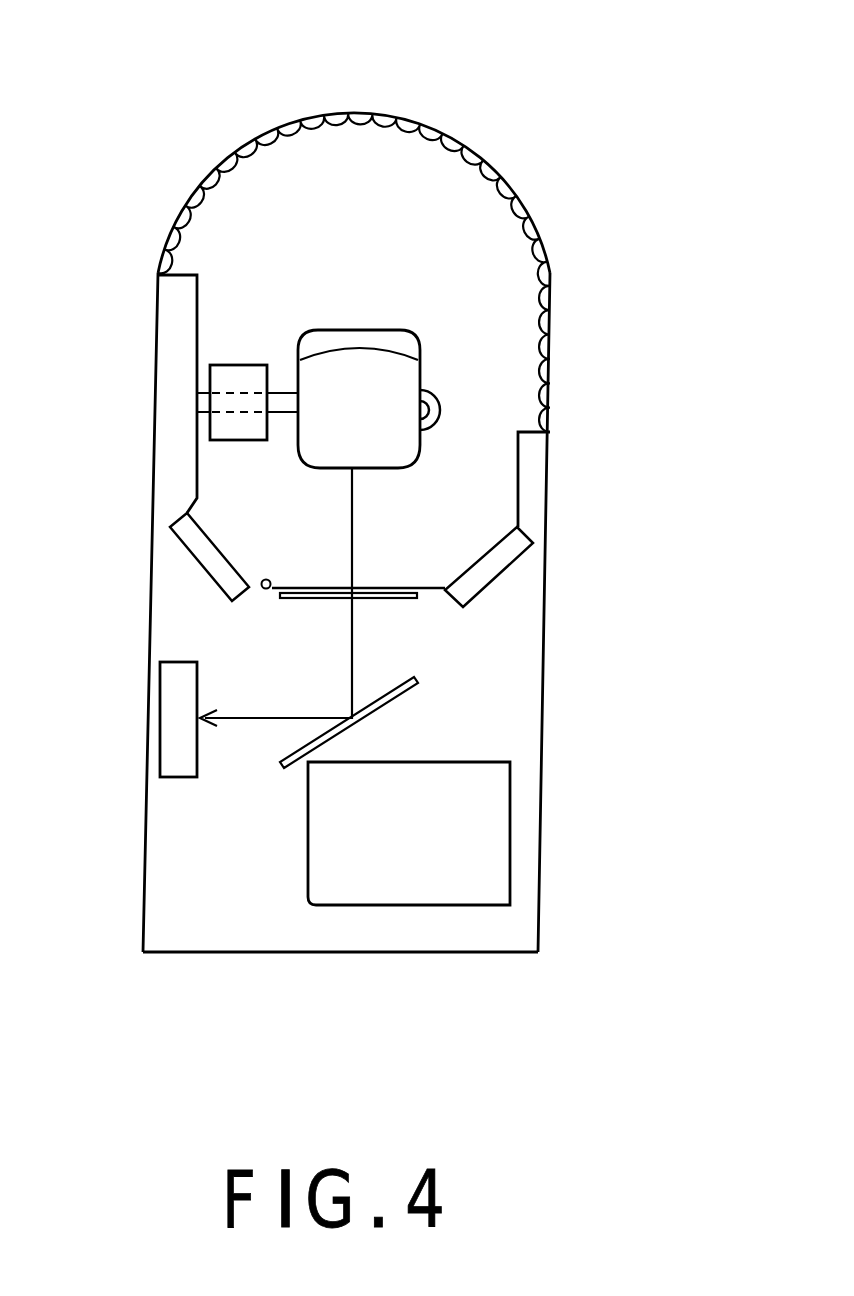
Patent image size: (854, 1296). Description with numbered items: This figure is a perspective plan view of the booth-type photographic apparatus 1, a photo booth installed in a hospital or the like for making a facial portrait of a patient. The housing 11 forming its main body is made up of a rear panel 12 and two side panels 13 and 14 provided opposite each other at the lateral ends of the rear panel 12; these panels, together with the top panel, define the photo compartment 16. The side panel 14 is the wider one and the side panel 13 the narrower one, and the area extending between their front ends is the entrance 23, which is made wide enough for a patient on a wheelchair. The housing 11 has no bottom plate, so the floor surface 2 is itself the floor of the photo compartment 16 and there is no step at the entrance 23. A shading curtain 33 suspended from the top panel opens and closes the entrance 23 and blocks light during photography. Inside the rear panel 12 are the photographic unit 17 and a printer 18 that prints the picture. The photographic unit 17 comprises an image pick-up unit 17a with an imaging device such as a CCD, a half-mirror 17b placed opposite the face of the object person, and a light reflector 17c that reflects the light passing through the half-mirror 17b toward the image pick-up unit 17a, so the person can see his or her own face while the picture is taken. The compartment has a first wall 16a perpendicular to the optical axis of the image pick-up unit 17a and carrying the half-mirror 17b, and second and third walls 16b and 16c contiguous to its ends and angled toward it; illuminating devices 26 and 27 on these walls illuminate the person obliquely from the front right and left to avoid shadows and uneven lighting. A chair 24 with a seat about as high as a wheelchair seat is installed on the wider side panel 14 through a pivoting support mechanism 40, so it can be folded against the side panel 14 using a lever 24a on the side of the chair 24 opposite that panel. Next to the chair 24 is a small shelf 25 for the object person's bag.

The photographic apparatus 1 is at (533, 55).
The floor surface 2 is at (252, 178).
The housing 11 is at (230, 952).
The rear panel 12 is at (420, 952).
The side panel 13 is at (533, 500).
The side panel 14 is at (150, 462).
The photo compartment 16 is at (377, 295).
The first wall 16a is at (268, 588).
The second wall 16b is at (203, 533).
The third wall 16c is at (503, 580).
The photographic unit 17 is at (441, 651).
The image pick-up unit 17a is at (172, 727).
The half-mirror 17b is at (363, 590).
The light reflector 17c is at (378, 712).
The printer 18 is at (492, 870).
The entrance 23 is at (323, 250).
The chair 24 is at (383, 378).
The lever 24a is at (450, 403).
The small shelf 25 is at (249, 365).
The illuminating device 26 is at (235, 578).
The illuminating device 27 is at (510, 537).
The shading curtain 33 is at (497, 167).
The pivoting support mechanism 40 is at (236, 456).